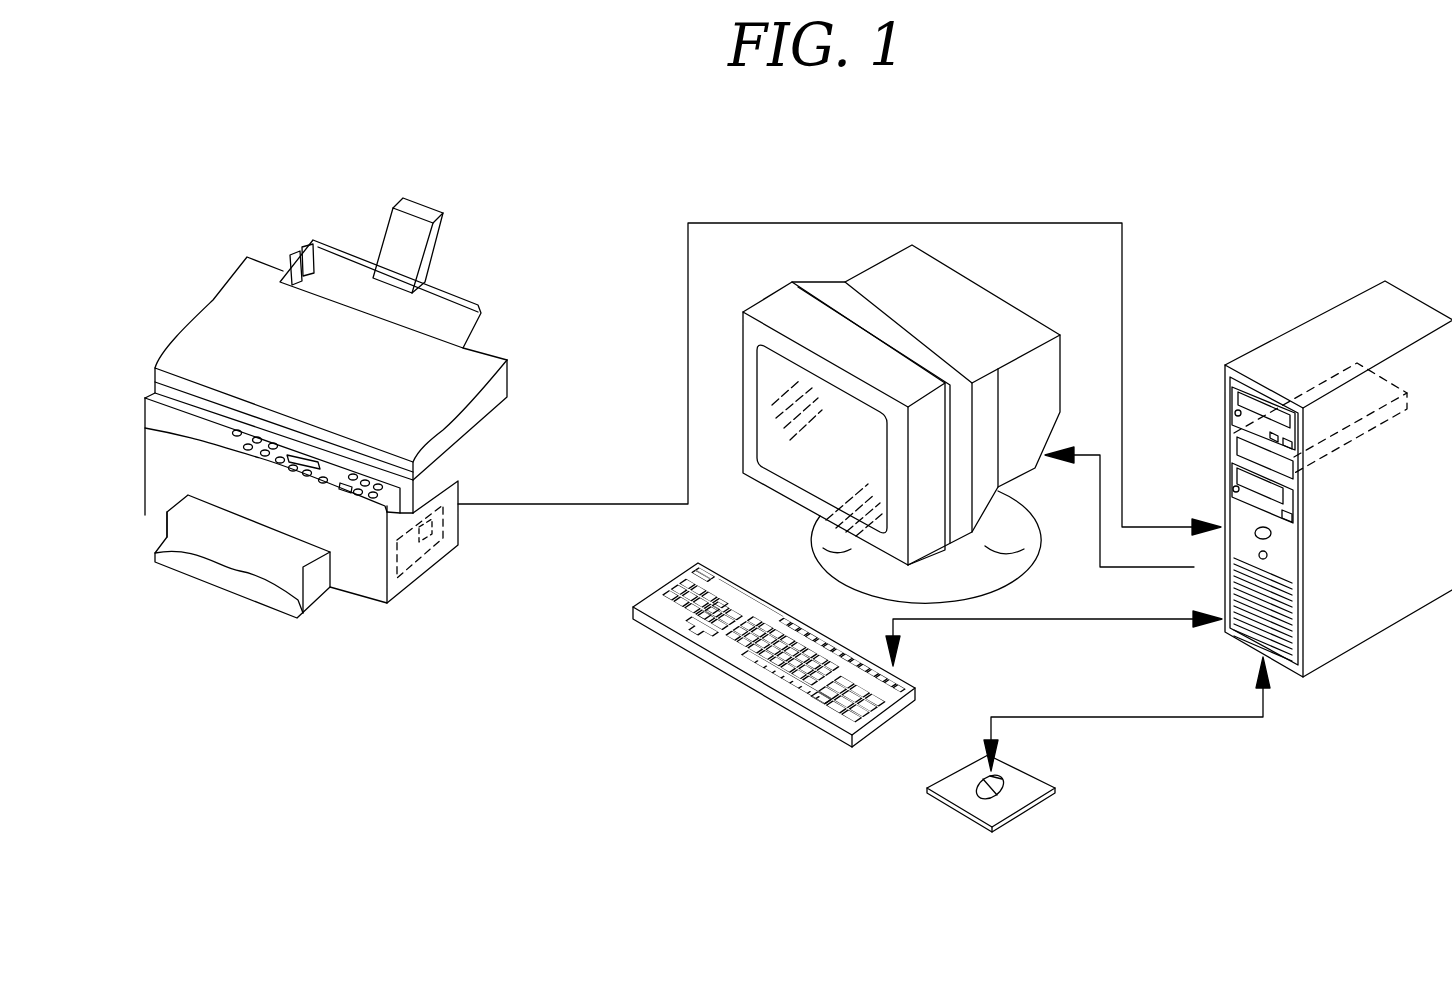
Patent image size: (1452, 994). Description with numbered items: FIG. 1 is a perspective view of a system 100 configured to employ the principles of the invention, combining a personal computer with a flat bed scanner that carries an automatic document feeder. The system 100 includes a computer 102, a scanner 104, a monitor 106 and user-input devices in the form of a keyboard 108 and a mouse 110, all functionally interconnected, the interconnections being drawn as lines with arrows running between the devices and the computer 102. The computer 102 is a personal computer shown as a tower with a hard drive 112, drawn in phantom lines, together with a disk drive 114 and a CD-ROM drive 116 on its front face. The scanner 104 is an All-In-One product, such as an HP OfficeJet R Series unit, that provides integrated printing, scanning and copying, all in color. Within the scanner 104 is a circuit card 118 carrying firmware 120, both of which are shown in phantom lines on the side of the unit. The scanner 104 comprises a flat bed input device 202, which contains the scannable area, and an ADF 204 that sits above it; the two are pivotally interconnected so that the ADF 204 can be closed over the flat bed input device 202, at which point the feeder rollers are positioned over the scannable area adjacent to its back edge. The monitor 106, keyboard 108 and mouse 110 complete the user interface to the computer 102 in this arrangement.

The system 100 is at (412, 774).
The computer 102 is at (1315, 280).
The scanner 104 is at (268, 217).
The monitor 106 is at (748, 518).
The keyboard 108 is at (748, 682).
The mouse 110 is at (982, 790).
The hard drive 112 is at (1247, 447).
The disk drive 114 is at (1237, 480).
The CD-ROM drive 116 is at (1247, 403).
The circuit card 118 is at (407, 567).
The firmware 120 is at (428, 534).
The flat bed input device 202 is at (508, 418).
The ADF 204 is at (485, 342).